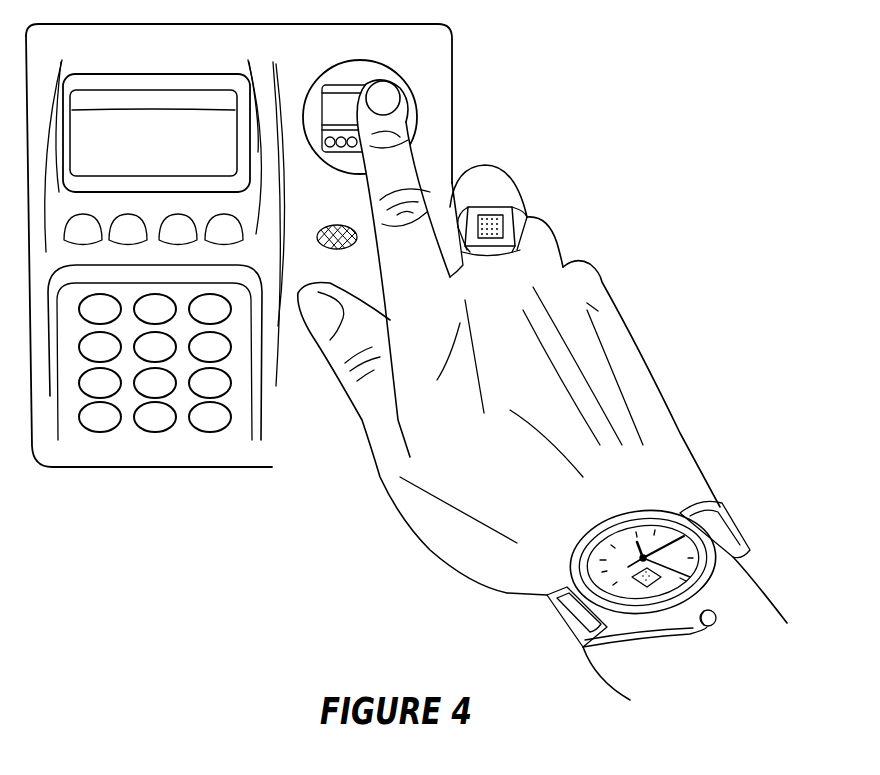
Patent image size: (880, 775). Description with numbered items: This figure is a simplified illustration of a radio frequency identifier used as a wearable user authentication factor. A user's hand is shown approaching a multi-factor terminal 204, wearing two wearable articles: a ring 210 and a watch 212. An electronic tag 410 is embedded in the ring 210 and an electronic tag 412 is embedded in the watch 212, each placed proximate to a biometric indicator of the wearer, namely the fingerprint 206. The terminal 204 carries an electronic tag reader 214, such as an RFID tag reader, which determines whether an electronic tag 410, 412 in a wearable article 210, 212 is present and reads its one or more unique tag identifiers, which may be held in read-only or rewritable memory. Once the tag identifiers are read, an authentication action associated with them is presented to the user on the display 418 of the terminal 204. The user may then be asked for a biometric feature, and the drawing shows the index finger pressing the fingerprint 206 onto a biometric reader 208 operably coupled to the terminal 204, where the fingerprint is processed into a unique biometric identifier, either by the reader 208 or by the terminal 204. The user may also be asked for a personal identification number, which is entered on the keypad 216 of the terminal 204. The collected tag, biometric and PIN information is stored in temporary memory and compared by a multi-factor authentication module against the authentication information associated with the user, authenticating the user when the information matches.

The multi-factor terminal 204 is at (239, 258).
The fingerprint 206 is at (401, 106).
The biometric reader 208 is at (367, 60).
The ring 210 is at (530, 218).
The watch 212 is at (634, 576).
The electronic tag reader 214 is at (341, 224).
The keypad 216 is at (165, 432).
The electronic tag 410 is at (489, 212).
The electronic tag 412 is at (662, 575).
The display 418 is at (166, 152).